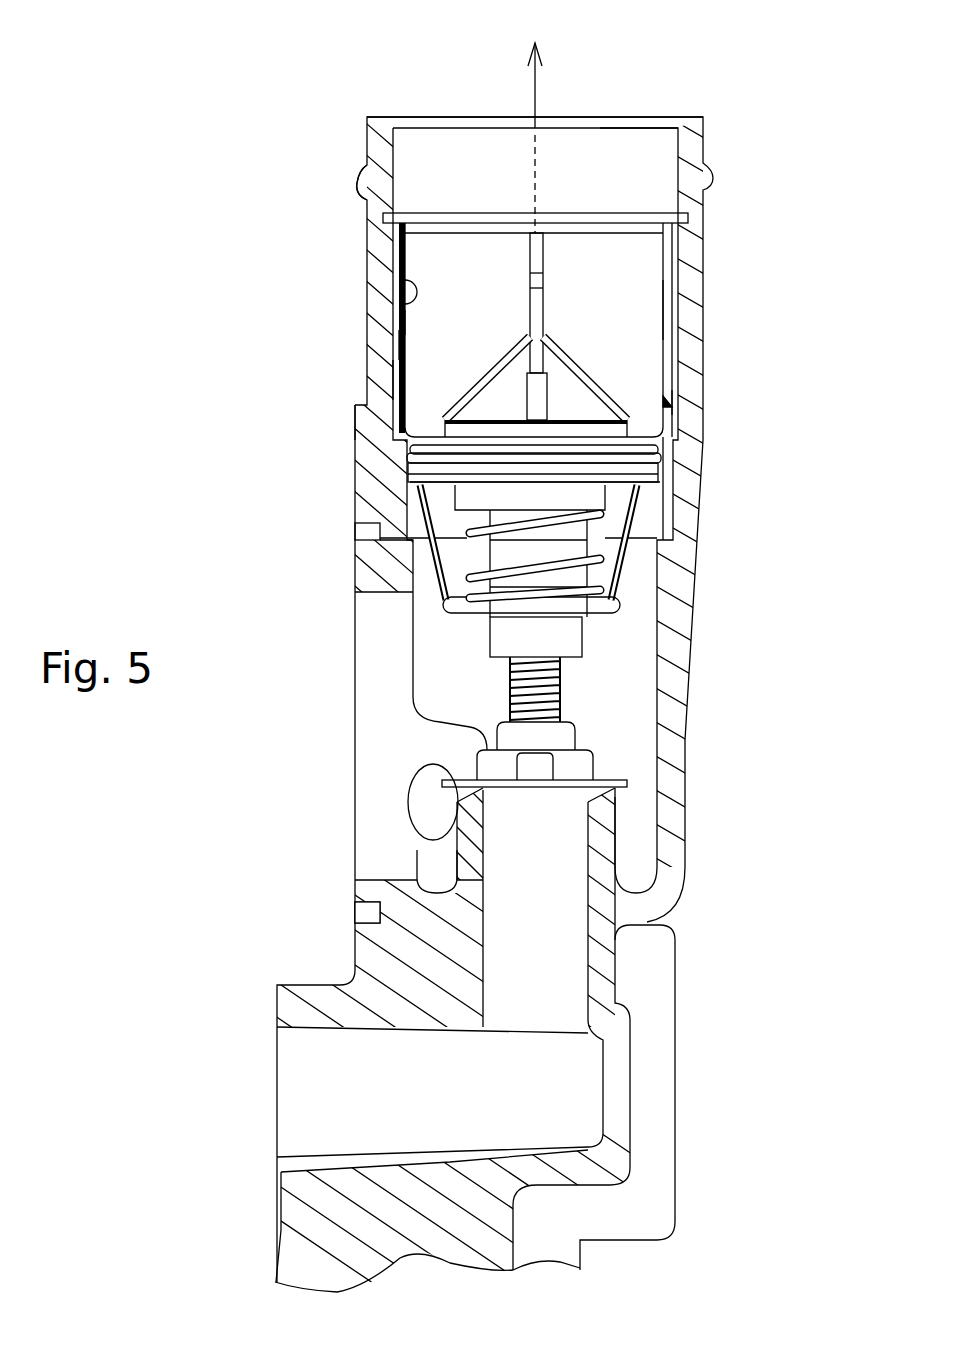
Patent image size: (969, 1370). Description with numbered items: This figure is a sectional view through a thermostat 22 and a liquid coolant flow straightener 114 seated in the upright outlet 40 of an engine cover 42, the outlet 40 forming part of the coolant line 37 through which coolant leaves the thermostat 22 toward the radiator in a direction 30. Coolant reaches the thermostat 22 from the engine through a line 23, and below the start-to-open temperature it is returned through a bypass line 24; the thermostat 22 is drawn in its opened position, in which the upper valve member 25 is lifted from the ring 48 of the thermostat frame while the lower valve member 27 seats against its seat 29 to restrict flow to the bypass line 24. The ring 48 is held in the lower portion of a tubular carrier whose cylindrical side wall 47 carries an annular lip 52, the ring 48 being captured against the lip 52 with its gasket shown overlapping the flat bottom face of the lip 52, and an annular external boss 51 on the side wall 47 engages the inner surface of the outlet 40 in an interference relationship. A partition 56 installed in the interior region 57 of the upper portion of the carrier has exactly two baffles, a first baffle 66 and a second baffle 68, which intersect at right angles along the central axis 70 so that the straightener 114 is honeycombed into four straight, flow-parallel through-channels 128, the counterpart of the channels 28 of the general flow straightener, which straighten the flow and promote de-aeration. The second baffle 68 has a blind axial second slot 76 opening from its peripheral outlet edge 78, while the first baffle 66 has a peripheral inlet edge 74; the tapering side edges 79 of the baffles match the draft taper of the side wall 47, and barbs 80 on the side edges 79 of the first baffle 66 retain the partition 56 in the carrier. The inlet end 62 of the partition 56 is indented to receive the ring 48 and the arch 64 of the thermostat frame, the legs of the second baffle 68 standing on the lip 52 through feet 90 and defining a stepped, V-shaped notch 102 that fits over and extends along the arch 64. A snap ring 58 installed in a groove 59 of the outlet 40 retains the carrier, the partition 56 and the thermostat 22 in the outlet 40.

The thermostat 22 is at (605, 640).
The line 23 is at (385, 877).
The bypass line 24 is at (483, 957).
The upper valve member 25 is at (463, 500).
The lower valve member 27 is at (580, 763).
The through-channels 28 is at (427, 322).
The seat 29 is at (603, 800).
The direction 30 is at (537, 88).
The coolant line 37 is at (395, 137).
The upright outlet 40 is at (698, 153).
The engine cover 42 is at (313, 985).
The cylindrical side wall 47 is at (400, 380).
The ring 48 is at (652, 475).
The annular external boss 51 is at (367, 493).
The annular lip 52 is at (353, 407).
The partition 56 is at (628, 338).
The interior region 57 is at (400, 283).
The snap ring 58 is at (422, 217).
The groove 59 is at (362, 190).
The inlet end 62 is at (507, 370).
The arch 64 is at (565, 377).
The first baffle 66 is at (540, 260).
The second baffle 68 is at (503, 302).
The central axis 70 is at (537, 177).
The peripheral inlet edge 74 is at (470, 407).
The second slot 76 is at (530, 248).
The peripheral outlet edge 78 is at (463, 230).
The peripheral side edges 79 is at (400, 340).
The barb 80 is at (543, 288).
The feet 90 is at (413, 443).
The notch 102 is at (677, 400).
The liquid coolant flow straightener 114 is at (635, 190).
The through-channels 128 is at (637, 311).